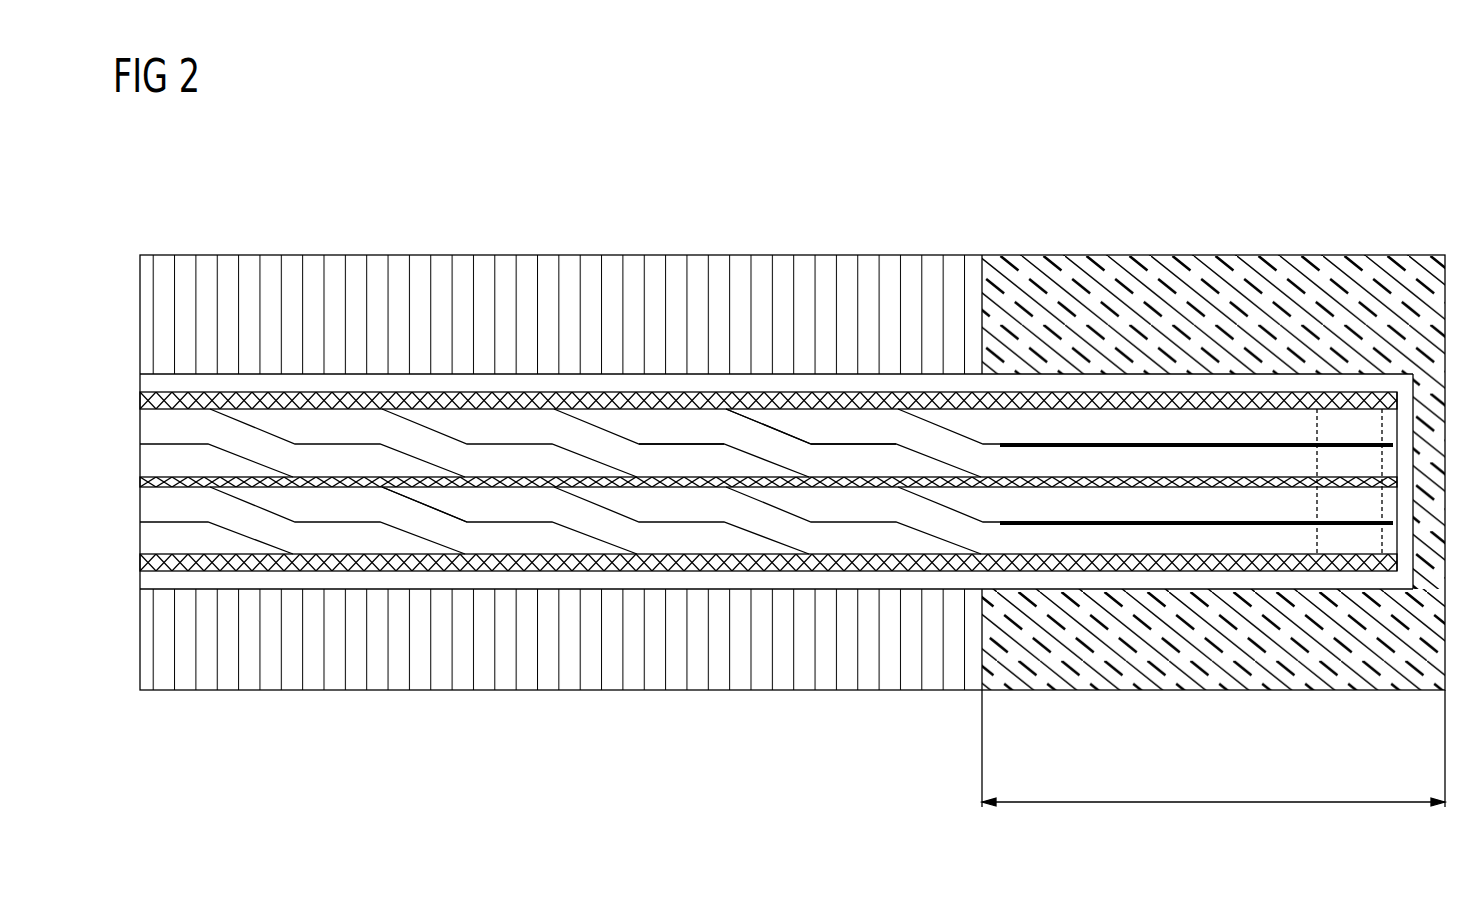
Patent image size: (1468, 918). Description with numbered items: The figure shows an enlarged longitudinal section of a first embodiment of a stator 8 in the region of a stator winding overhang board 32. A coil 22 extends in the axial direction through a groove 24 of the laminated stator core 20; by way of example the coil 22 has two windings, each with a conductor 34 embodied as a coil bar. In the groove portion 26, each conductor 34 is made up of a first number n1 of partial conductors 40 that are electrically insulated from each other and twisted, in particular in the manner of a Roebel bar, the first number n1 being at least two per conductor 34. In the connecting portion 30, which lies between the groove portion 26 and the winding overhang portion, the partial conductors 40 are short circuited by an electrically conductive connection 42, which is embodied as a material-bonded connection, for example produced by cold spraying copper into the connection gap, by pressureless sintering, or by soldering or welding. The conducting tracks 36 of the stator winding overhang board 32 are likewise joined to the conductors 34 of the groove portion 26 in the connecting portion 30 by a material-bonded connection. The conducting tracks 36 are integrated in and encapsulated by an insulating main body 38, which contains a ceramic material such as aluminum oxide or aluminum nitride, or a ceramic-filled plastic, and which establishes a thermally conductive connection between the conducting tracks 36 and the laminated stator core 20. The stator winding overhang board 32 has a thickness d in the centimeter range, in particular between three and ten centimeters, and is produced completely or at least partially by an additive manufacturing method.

The stator 8 is at (1278, 156).
The laminated stator core 20 is at (648, 272).
The coil 22 is at (321, 458).
The groove 24 is at (525, 392).
The groove portion 26 is at (770, 520).
The connecting portion 30 is at (1140, 500).
The stator winding overhang board 32 is at (1195, 295).
The conductor 34 is at (712, 432).
The conducting track 36 is at (1345, 425).
The insulating main body 38 is at (1352, 650).
The partial conductor 40 is at (826, 462).
The electrically conductive connection 42 is at (1073, 445).
The first number of partial conductors n1 is at (190, 423).
The thickness d is at (1228, 800).